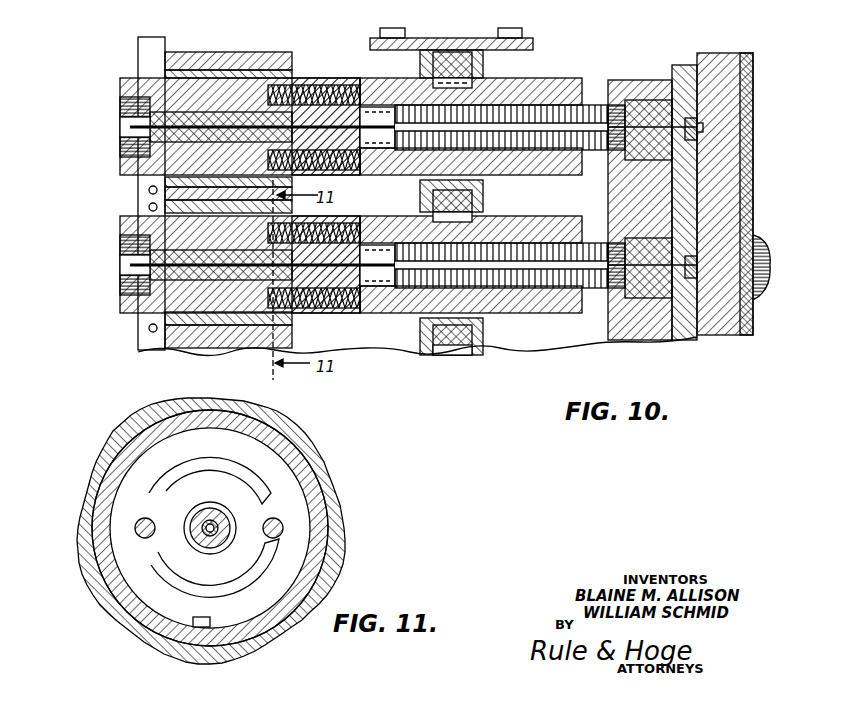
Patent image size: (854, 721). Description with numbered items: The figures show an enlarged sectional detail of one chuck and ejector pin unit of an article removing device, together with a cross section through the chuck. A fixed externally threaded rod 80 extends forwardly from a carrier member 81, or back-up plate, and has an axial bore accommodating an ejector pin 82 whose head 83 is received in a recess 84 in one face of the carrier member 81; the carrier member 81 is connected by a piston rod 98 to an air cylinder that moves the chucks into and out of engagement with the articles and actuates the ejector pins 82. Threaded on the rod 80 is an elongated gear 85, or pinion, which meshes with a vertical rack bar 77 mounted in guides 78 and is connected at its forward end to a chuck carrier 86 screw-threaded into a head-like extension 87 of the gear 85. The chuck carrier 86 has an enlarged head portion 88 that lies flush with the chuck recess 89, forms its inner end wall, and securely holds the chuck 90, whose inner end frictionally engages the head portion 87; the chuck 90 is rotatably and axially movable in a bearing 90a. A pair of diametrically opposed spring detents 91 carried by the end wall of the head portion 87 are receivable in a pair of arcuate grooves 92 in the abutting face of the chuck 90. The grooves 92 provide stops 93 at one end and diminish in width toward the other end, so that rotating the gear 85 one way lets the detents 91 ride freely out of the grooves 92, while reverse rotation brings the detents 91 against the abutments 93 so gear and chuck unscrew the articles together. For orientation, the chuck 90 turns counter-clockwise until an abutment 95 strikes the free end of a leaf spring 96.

In FIG. 10, the rack bar 77 is at (450, 62).
In FIG. 10, the guide 78 is at (483, 62).
In FIG. 10, the externally threaded rod 80 is at (590, 105).
In FIG. 10, the carrier member 81 is at (672, 68).
In FIG. 10, the ejector pin 82 is at (130, 127).
In FIG. 11, the ejector pin 82 is at (218, 528).
In FIG. 10, the head 83 is at (700, 128).
In FIG. 10, the recess 84 is at (690, 118).
In FIG. 10, the elongated gear 85 is at (566, 82).
In FIG. 10, the chuck carrier 86 is at (185, 115).
In FIG. 11, the chuck carrier 86 is at (216, 516).
In FIG. 10, the head-like extension 87 is at (320, 78).
In FIG. 10, the enlarged head portion 88 is at (135, 143).
In FIG. 10, the chuck recess 89 is at (130, 107).
In FIG. 10, the chuck 90 is at (120, 166).
In FIG. 11, the chuck 90 is at (296, 430).
In FIG. 10, the bearing 90a is at (188, 74).
In FIG. 11, the bearing 90a is at (300, 457).
In FIG. 10, the spring detents 91 is at (272, 95).
In FIG. 11, the spring detents 91 is at (138, 528).
In FIG. 11, the arcuate grooves 92 is at (157, 492).
In FIG. 11, the stops 93 is at (285, 518).
In FIG. 11, the abutment 95 is at (200, 628).
In FIG. 10, the leaf spring 96 is at (148, 190).
In FIG. 10, the piston rod 98 is at (760, 300).